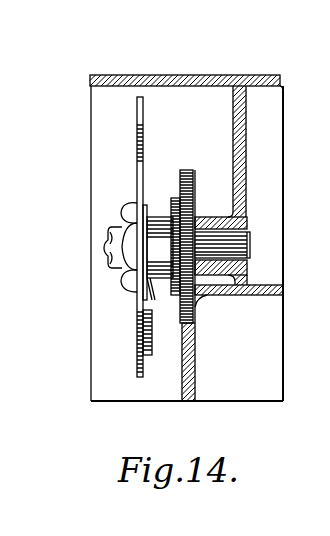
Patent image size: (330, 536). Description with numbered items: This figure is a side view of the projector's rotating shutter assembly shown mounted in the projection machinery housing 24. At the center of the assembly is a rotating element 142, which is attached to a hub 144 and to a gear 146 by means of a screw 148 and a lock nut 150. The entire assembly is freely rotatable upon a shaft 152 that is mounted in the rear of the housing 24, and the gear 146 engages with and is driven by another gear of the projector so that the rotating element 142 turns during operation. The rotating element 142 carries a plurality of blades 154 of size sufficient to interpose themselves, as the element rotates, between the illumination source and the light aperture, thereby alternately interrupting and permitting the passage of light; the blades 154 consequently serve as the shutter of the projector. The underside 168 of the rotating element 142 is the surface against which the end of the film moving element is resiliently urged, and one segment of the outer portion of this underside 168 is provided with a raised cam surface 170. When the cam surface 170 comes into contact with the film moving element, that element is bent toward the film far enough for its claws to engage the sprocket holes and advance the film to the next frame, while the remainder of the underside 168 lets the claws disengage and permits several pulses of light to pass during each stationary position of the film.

The projection machinery housing 24 is at (203, 75).
The rotating element 142 is at (146, 242).
The hub 144 is at (157, 218).
The gear 146 is at (186, 170).
The screw 148 is at (110, 250).
The lock nut 150 is at (128, 208).
The shaft 152 is at (243, 246).
The blades 154 is at (143, 106).
The underside 168 is at (146, 158).
The cam surface 170 is at (148, 338).